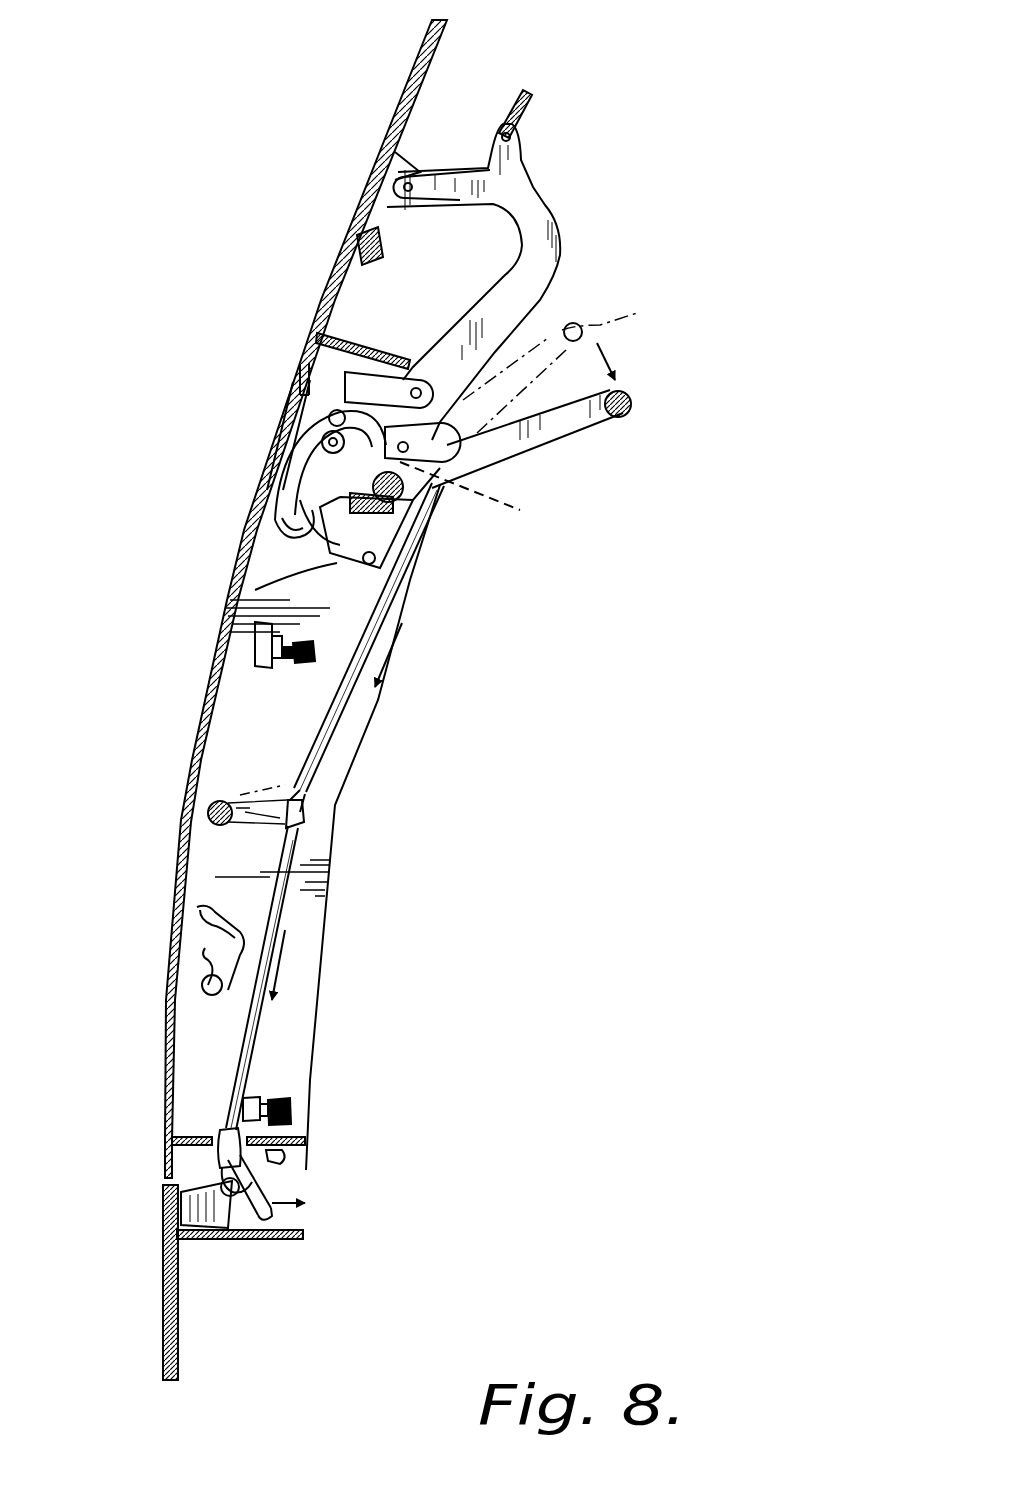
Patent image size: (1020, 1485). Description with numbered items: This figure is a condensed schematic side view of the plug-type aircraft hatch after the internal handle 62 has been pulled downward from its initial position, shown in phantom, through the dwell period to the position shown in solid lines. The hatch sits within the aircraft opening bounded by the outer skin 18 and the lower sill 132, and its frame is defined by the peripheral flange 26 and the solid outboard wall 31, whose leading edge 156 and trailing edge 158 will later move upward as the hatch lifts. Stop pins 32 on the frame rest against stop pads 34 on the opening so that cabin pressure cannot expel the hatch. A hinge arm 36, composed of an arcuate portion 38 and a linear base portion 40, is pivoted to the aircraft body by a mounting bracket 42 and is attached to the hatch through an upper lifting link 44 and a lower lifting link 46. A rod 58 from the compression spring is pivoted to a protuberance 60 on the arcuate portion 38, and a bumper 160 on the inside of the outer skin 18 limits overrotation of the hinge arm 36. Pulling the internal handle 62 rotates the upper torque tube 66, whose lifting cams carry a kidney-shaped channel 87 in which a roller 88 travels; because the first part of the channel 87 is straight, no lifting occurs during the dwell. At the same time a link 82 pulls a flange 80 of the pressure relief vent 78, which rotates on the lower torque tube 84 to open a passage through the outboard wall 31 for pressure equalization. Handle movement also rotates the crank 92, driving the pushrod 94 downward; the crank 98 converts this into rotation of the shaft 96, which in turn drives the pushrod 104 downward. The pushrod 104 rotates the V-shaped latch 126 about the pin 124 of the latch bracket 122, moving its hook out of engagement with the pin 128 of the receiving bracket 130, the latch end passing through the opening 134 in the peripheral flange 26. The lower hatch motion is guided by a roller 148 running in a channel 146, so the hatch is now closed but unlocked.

The outer skin 18 is at (378, 168).
The peripheral flange 26 is at (297, 992).
The outboard wall 31 is at (190, 828).
The stop pin 32 is at (303, 667).
The stop pad 34 is at (255, 648).
The hinge arm 36 is at (578, 254).
The arcuate portion 38 is at (555, 212).
The base portion 40 is at (388, 542).
The mounting bracket 42 is at (408, 162).
The upper lifting link 44 is at (378, 352).
The lower lifting link 46 is at (303, 577).
The rod 58 is at (530, 103).
The protuberance 60 is at (515, 166).
The internal handle 62 is at (632, 405).
The upper torque tube 66 is at (420, 515).
The pressure relief vent 78 is at (293, 408).
The flange 80 is at (330, 390).
The link 82 is at (470, 452).
The lower torque tube 84 is at (280, 510).
The kidney-shaped channel 87 is at (270, 493).
The roller 88 is at (310, 440).
The crank 92 is at (505, 505).
The pushrod 94 is at (397, 605).
The shaft 96 is at (213, 826).
The crank 98 is at (302, 812).
The pushrod 104 is at (330, 878).
The latch bracket 122 is at (283, 1156).
The pin 124 is at (283, 1172).
The latch 126 is at (268, 1218).
The pin 128 is at (220, 1178).
The receiving bracket 130 is at (190, 1215).
The lower sill 132 is at (243, 1242).
The opening 134 is at (214, 1138).
The channel 146 is at (197, 907).
The roller 148 is at (203, 985).
The leading edge 156 is at (340, 262).
The trailing edge 158 is at (221, 1187).
The bumper 160 is at (384, 248).